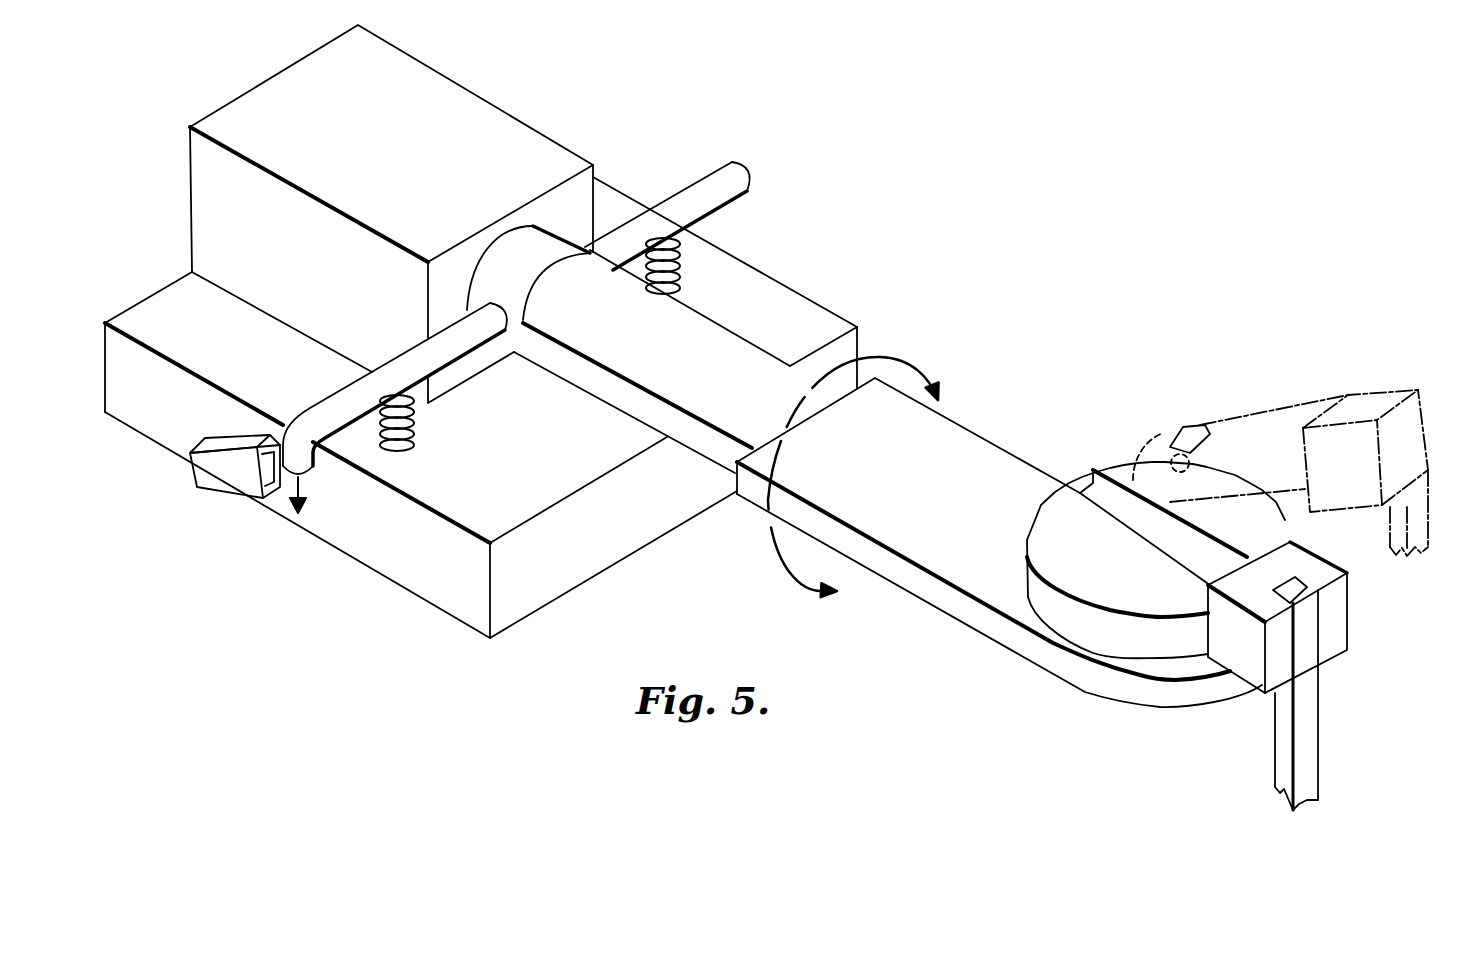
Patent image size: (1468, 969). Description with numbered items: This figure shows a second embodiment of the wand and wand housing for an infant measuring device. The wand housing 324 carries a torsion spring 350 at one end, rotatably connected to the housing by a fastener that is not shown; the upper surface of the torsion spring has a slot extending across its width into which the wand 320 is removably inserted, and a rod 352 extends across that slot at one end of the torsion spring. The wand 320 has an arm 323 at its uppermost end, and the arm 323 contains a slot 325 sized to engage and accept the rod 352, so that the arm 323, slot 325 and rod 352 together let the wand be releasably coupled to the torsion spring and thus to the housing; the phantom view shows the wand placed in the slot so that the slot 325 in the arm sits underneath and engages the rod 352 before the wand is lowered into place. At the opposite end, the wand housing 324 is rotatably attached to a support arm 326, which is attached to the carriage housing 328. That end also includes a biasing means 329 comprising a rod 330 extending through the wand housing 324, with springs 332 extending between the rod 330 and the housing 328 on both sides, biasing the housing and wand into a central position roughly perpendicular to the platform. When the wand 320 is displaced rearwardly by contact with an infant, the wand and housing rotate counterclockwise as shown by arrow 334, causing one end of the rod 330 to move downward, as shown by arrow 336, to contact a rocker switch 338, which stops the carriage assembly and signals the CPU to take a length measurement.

The wand 320 is at (1278, 749).
The arm 323 is at (1153, 517).
The wand housing 324 is at (977, 442).
The slot 325 is at (1257, 417).
The support arm 326 is at (512, 123).
The carriage housing 328 is at (165, 433).
The biasing means 329 is at (745, 163).
The rod 330 is at (463, 343).
The springs 332 is at (397, 448).
The arrow 334 is at (790, 585).
The arrow 336 is at (296, 513).
The rocker switch 338 is at (227, 483).
The torsion spring 350 is at (1065, 628).
The rod 352 is at (1116, 495).